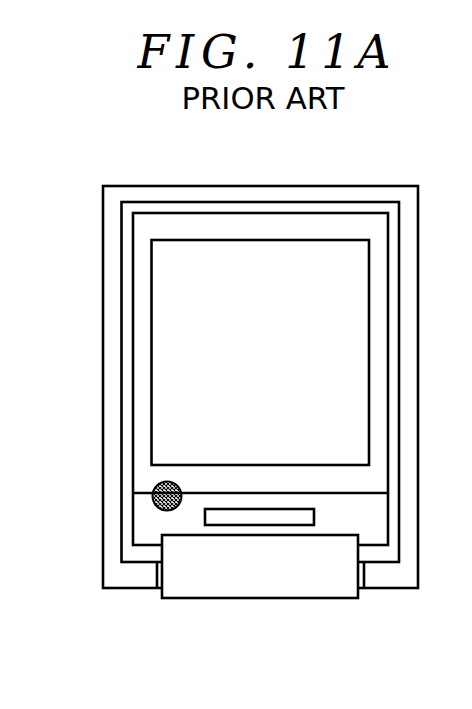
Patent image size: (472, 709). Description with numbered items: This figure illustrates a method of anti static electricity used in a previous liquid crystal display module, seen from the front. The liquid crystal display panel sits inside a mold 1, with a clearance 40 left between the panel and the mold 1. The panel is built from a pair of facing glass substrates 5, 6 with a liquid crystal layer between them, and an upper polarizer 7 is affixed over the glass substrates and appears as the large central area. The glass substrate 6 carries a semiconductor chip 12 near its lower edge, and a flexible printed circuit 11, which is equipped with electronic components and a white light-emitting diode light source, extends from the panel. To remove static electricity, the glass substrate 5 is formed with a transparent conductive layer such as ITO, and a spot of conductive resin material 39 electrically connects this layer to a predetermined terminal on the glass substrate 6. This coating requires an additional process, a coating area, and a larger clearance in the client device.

The mold 1 is at (116, 186).
The clearance 40 is at (237, 207).
The glass substrate 5 is at (379, 222).
The upper polarizer 7 is at (165, 288).
The glass substrate 6 is at (148, 521).
The conductive resin material 39 is at (165, 478).
The flexible printed circuit 11 is at (186, 590).
The semiconductor chip 12 is at (252, 517).